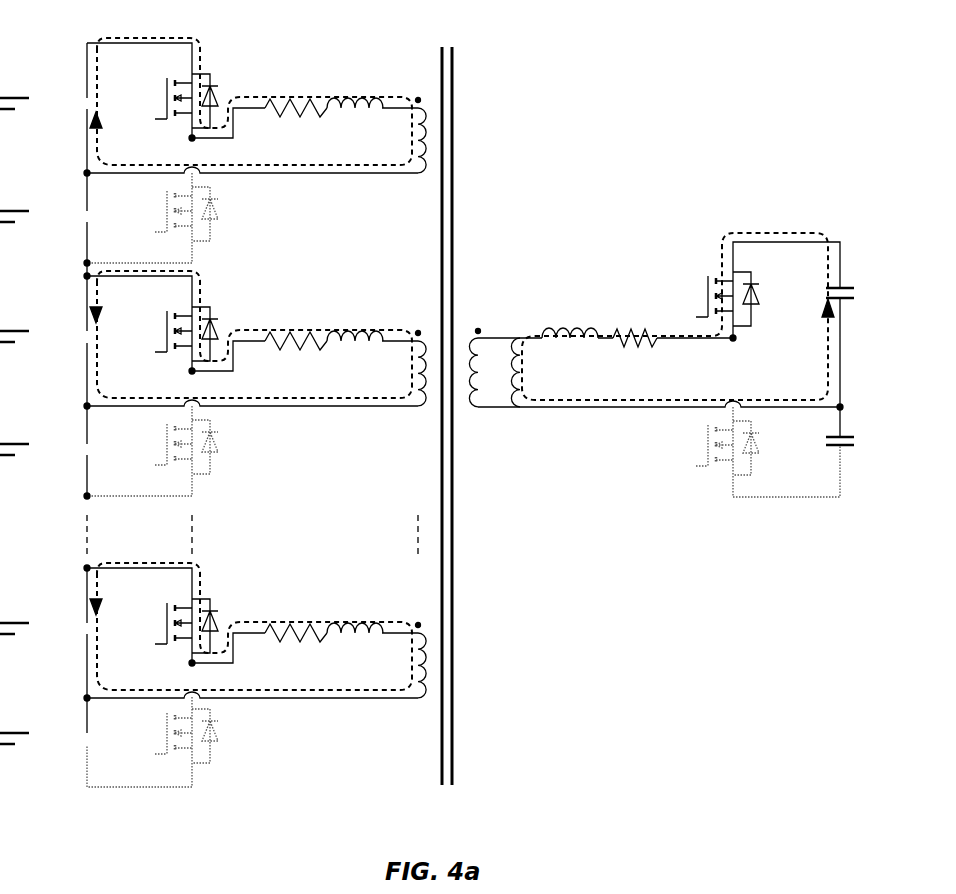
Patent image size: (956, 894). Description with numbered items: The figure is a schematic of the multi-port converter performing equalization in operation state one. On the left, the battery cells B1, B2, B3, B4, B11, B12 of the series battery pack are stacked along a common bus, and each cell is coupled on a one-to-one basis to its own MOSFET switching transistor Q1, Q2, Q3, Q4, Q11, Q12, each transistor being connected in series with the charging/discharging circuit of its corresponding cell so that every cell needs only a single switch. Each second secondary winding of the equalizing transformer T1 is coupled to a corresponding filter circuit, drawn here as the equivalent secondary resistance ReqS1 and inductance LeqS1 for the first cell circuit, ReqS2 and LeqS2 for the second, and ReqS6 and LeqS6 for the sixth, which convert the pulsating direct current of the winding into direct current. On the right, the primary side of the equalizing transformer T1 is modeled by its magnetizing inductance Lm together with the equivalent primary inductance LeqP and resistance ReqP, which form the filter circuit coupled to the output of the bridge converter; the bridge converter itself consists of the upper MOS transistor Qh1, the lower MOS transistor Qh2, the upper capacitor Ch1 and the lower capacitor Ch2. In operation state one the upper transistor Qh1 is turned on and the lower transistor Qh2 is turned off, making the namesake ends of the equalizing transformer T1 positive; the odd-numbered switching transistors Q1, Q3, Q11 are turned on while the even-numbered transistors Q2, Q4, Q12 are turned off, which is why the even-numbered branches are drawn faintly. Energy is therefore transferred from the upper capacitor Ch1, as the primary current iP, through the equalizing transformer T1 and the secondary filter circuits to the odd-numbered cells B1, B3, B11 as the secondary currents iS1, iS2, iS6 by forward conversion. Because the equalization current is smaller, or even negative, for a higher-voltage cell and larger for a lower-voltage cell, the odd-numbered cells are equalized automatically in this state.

The battery cell B1 is at (24, 98).
The battery cell B2 is at (24, 212).
The battery cell B3 is at (24, 331).
The battery cell B4 is at (24, 445).
The battery cell B11 is at (27, 623).
The battery cell B12 is at (27, 734).
The MOSFET switching transistor Q1 is at (174, 101).
The MOSFET switching transistor Q2 is at (152, 218).
The MOSFET switching transistor Q3 is at (174, 334).
The MOSFET switching transistor Q4 is at (152, 451).
The MOSFET switching transistor Q11 is at (171, 626).
The MOSFET switching transistor Q12 is at (152, 742).
The equivalent secondary resistance 1 ReqS1 is at (292, 91).
The equivalent secondary inductance 1 LeqS1 is at (358, 86).
The equivalent secondary resistance 2 ReqS2 is at (292, 324).
The equivalent secondary inductance 2 LeqS2 is at (358, 319).
The equivalent secondary resistance 6 ReqS6 is at (291, 616).
The equivalent secondary inductance 6 LeqS6 is at (358, 611).
The secondary current 1 iS1 is at (251, 101).
The secondary current 2 iS2 is at (251, 334).
The secondary current 6 iS6 is at (251, 626).
The primary current iP is at (678, 316).
The equalizing transformer T1 is at (428, 416).
The magnetizing inductance Lm is at (535, 372).
The equivalent primary inductance LeqP is at (570, 313).
The equivalent primary resistance ReqP is at (636, 317).
The upper MOS transistor Qh1 is at (712, 299).
The lower MOS transistor Qh2 is at (752, 452).
The upper capacitor Ch1 is at (821, 299).
The capacitor 2 Ch2 is at (826, 459).